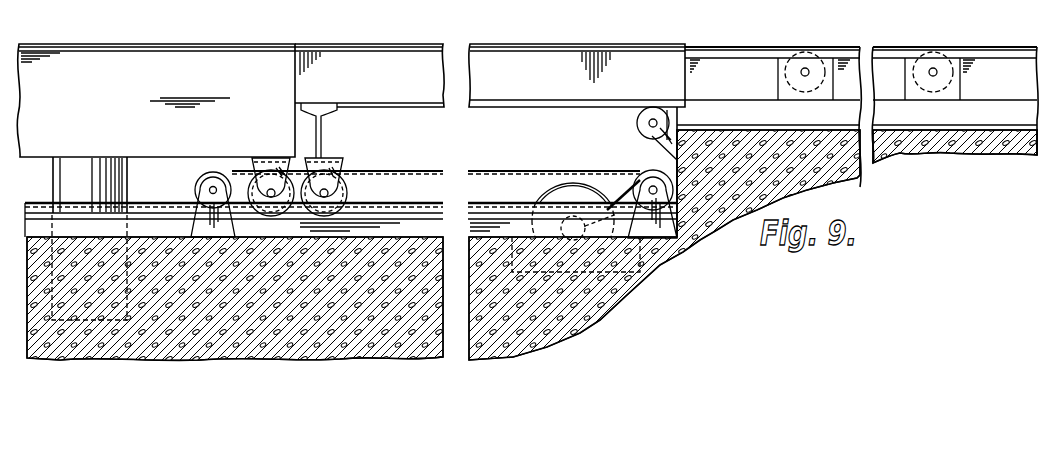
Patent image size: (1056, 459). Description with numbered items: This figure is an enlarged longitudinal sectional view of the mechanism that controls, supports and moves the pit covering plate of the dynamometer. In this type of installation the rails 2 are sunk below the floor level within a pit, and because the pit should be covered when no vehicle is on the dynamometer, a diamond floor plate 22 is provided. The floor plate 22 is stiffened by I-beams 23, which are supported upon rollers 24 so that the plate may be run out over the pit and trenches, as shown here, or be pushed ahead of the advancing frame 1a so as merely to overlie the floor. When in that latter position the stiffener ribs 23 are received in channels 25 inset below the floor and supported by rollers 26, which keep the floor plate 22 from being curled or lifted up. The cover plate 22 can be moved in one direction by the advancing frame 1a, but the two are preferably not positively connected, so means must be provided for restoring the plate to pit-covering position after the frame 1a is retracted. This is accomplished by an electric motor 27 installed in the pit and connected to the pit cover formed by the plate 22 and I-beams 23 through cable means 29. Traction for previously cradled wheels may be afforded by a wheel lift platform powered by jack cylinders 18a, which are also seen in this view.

The frame 1a is at (128, 113).
The jack cylinders 18a is at (67, 193).
The rails 2 is at (143, 213).
The floor plate 22 is at (592, 46).
The I-beams 23 is at (432, 98).
The rollers 24 is at (350, 175).
The channels 25 is at (980, 107).
The rollers 26 is at (915, 50).
The electric motor 27 is at (558, 195).
The cable means 29 is at (480, 169).